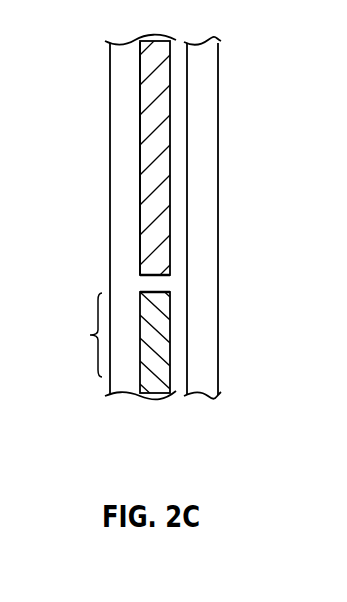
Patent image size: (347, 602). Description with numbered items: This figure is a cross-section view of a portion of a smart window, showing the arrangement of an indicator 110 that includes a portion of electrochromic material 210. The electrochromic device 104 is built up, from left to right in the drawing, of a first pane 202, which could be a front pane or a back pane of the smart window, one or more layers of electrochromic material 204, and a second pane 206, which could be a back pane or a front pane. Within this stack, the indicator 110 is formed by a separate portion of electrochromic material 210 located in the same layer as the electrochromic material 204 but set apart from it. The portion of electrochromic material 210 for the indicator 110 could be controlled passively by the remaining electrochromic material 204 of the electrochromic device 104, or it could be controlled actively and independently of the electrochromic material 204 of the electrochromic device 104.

The electrochromic device 104 is at (143, 218).
The first pane 202 is at (125, 215).
The electrochromic material 204 is at (152, 85).
The second pane 206 is at (200, 95).
The portion of electrochromic material 210 is at (160, 348).
The indicator 110 is at (74, 335).